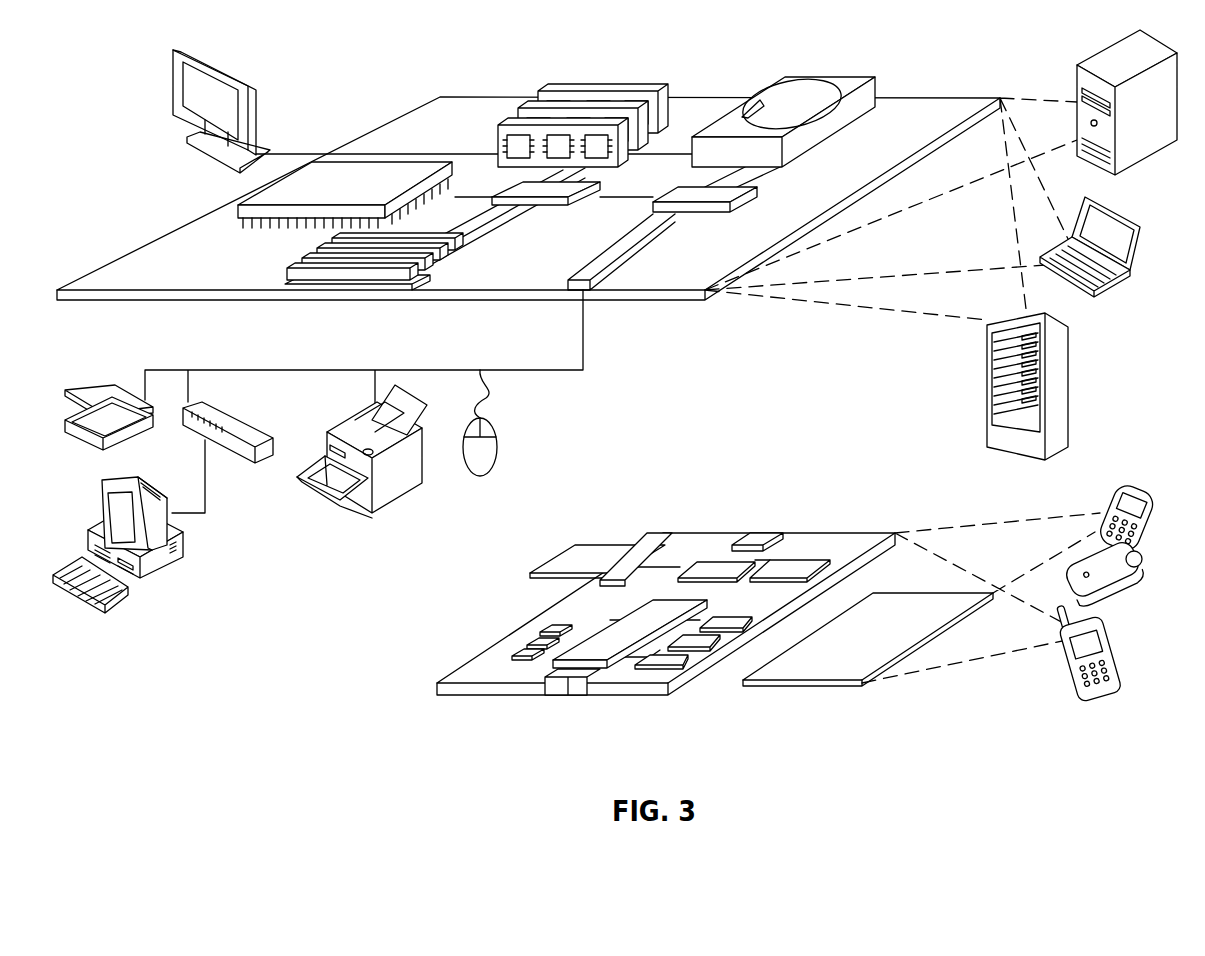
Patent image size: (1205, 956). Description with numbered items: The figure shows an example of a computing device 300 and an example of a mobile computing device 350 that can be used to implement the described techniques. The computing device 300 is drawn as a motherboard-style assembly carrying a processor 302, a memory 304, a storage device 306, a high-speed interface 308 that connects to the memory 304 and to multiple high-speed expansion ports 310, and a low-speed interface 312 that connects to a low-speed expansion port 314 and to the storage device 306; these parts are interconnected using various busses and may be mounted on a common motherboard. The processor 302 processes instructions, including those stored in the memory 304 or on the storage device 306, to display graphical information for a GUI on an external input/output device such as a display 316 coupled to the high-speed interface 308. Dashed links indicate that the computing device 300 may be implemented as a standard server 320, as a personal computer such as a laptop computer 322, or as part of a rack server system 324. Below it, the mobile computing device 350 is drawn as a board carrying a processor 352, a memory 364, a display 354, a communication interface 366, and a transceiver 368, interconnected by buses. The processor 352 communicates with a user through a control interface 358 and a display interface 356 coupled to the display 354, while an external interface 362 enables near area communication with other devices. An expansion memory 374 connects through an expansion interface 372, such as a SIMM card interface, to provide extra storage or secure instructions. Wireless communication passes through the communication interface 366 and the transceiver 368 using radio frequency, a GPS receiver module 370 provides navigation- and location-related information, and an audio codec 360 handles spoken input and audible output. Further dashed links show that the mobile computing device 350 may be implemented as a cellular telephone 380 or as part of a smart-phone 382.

The computing device 300 is at (357, 66).
The processor 302 is at (237, 208).
The memory 304 is at (552, 91).
The storage device 306 is at (776, 80).
The high-speed interface 308 is at (522, 194).
The high-speed expansion ports 310 is at (300, 270).
The low-speed interface 312 is at (687, 200).
The low-speed expansion port 314 is at (588, 293).
The display 316 is at (178, 48).
The standard server 320 is at (1076, 84).
The laptop computer 322 is at (1140, 230).
The rack server system 324 is at (986, 409).
The mobile computing device 350 is at (411, 697).
The processor 352 is at (603, 655).
The display 354 is at (838, 676).
The display interface 356 is at (670, 664).
The control interface 358 is at (700, 646).
The audio codec 360 is at (722, 628).
The external interface 362 is at (569, 686).
The memory 364 is at (517, 651).
The communication interface 366 is at (717, 566).
The transceiver 368 is at (790, 566).
The GPS receiver module 370 is at (765, 538).
The expansion interface 372 is at (650, 548).
The expansion memory 374 is at (577, 546).
The cellular telephone 380 is at (1103, 462).
The smart-phone 382 is at (1066, 657).